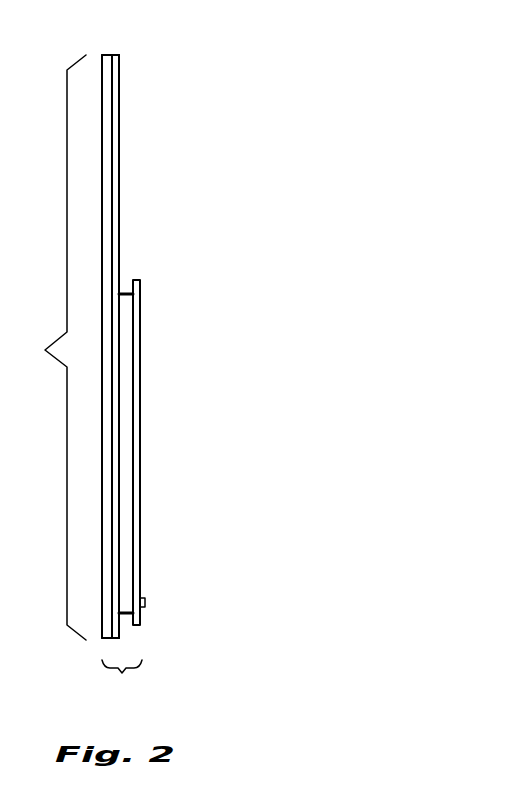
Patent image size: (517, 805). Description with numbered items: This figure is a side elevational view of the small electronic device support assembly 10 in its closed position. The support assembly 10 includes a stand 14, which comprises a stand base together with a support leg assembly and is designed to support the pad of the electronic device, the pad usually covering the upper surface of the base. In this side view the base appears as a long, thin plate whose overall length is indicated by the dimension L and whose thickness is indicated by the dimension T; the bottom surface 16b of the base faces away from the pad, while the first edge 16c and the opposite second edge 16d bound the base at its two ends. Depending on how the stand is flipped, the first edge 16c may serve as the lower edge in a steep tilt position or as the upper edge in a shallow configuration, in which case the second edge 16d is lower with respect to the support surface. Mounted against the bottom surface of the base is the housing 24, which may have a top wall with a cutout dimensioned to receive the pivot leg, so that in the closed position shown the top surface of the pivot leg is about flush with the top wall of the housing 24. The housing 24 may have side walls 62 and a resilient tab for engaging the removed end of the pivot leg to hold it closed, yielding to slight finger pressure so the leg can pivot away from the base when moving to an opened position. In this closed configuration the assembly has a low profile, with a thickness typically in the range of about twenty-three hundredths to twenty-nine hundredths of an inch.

The support assembly 10 is at (169, 268).
The stand 14 is at (141, 206).
The bottom surface 16b is at (120, 125).
The first edge 16c is at (113, 638).
The second edge 16d is at (116, 55).
The housing 24 is at (142, 340).
The side walls 62 is at (125, 405).
The length of panel L is at (51, 347).
The thickness of panel T is at (122, 683).